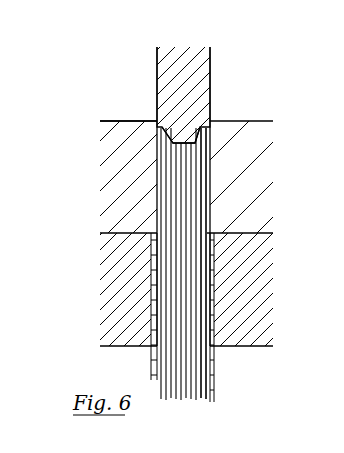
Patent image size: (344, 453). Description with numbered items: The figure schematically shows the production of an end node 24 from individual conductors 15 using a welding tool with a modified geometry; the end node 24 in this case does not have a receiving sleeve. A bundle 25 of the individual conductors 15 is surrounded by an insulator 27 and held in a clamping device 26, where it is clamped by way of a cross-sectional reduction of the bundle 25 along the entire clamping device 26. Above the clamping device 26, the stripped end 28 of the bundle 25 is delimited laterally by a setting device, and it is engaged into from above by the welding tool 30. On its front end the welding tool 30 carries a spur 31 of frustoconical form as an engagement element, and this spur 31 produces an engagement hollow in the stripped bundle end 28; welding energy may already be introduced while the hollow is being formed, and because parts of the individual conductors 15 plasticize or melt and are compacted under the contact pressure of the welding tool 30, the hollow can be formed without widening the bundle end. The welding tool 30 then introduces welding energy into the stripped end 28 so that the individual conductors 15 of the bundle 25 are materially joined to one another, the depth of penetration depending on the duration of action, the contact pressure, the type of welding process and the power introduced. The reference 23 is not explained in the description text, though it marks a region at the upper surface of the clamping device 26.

The individual conductors 15 is at (178, 403).
The upper surface 23 is at (115, 140).
The end node 24 is at (229, 114).
The bundle 25 is at (205, 387).
The clamping device 26 is at (96, 318).
The insulator 27 is at (212, 360).
The stripped end 28 is at (210, 162).
The welding tool 30 is at (212, 80).
The spur 31 is at (167, 130).